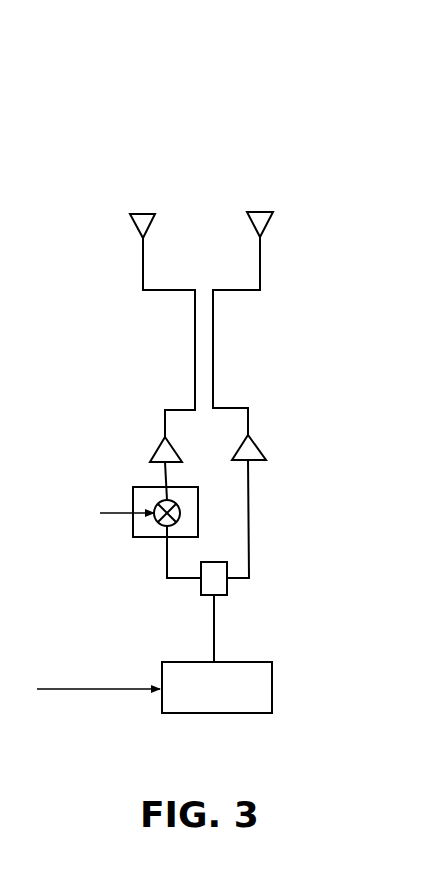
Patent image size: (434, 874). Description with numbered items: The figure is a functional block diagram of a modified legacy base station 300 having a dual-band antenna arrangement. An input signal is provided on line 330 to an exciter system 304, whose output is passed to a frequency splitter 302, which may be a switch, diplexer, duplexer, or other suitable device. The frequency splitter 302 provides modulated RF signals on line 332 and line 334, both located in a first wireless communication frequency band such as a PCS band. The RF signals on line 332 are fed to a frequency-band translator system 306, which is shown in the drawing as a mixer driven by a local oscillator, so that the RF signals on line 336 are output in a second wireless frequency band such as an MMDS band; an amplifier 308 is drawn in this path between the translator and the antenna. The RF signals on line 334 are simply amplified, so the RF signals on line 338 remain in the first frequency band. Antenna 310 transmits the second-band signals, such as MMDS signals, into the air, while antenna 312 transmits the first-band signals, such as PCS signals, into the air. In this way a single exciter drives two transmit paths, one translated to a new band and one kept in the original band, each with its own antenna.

The communication system 300 is at (112, 95).
The frequency splitter 302 is at (227, 588).
The exciter system 304 is at (262, 450).
The frequency-band translator system 306 is at (142, 537).
The amplifier 308 is at (152, 446).
The antenna 310 is at (130, 215).
The antenna 312 is at (273, 220).
The line 330 is at (78, 689).
The line 332 is at (177, 578).
The line 334 is at (250, 532).
The line 336 is at (178, 408).
The line 338 is at (236, 405).